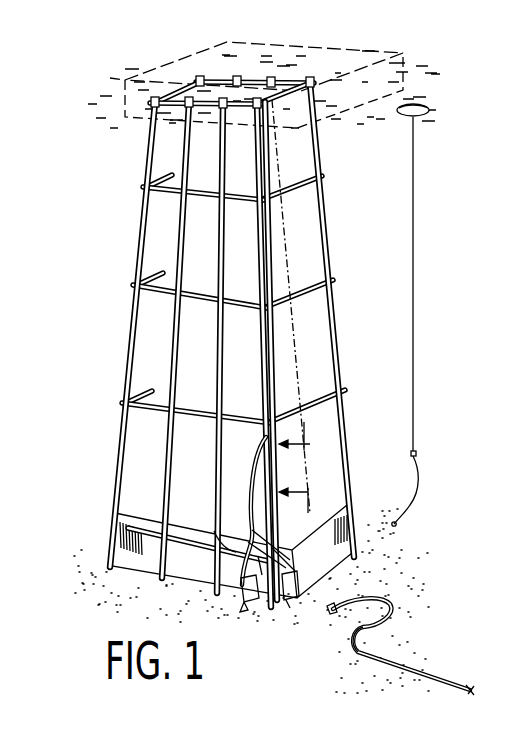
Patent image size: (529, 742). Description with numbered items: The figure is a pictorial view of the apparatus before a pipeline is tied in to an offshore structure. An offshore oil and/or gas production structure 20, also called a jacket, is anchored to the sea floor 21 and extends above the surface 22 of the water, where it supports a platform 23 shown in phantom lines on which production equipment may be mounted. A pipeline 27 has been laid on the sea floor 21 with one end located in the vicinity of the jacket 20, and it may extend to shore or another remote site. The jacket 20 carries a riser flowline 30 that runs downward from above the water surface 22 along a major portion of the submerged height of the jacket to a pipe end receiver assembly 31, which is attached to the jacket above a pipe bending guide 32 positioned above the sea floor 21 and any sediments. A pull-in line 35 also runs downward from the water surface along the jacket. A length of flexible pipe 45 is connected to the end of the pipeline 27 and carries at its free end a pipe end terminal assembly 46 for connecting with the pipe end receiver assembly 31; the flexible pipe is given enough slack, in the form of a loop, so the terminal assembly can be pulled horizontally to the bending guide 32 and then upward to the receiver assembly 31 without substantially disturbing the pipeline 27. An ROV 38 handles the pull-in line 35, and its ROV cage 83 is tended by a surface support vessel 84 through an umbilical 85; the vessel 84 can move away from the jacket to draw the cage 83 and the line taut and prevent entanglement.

The offshore oil and/or gas production structure 20 is at (134, 279).
The sea floor 21 is at (75, 572).
The surface of the water 22 is at (85, 98).
The platform 23 is at (280, 45).
The pipeline 27 is at (445, 681).
The riser flowline 30 is at (254, 529).
The pipe end receiver assembly 31 is at (255, 600).
The pipe bending guide 32 is at (291, 600).
The pull-in line 35 is at (214, 531).
The ROV 38 is at (396, 527).
The flexible pipe 45 is at (391, 604).
The pipe end terminal assembly 46 is at (372, 630).
The ROV cage 83 is at (417, 453).
The surface support vessel 84 is at (428, 106).
The umbilical 85 is at (415, 248).